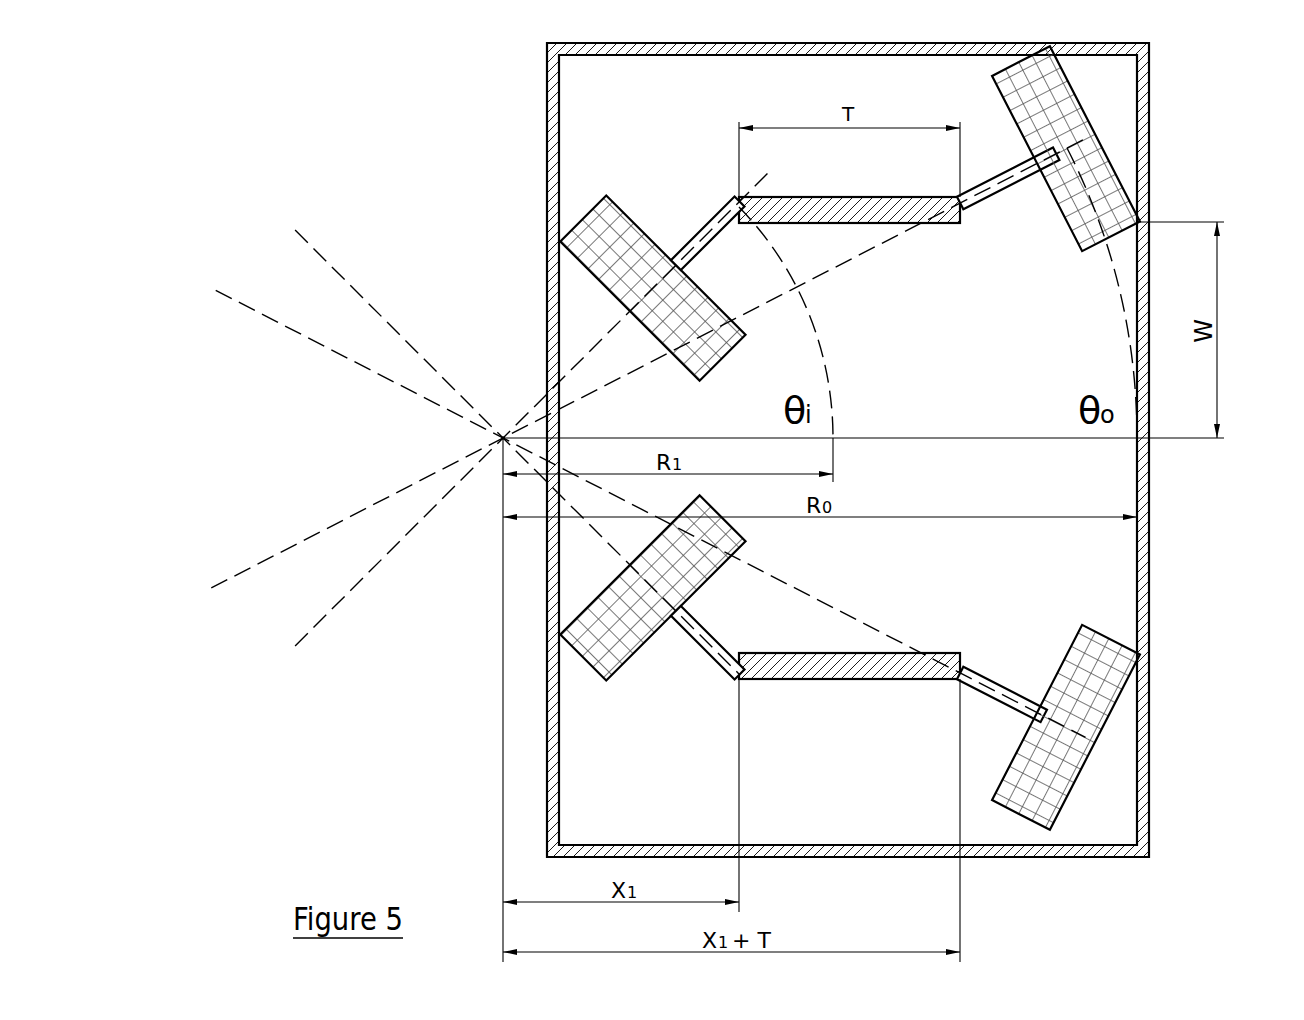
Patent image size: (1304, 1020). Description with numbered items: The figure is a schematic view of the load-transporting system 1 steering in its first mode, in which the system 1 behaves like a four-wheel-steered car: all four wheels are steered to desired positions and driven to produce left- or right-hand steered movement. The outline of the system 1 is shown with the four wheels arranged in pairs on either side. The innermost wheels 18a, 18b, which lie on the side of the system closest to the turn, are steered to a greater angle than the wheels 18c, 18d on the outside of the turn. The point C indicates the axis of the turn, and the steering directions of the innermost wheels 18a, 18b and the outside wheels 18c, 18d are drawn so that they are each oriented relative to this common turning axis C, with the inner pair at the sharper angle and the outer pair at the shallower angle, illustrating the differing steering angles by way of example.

The system 1 is at (1149, 463).
The innermost wheel 18a is at (588, 222).
The innermost wheel 18b is at (577, 641).
The outside wheel 18c is at (1075, 124).
The outside wheel 18d is at (1095, 708).
The axis of the turn C is at (503, 438).